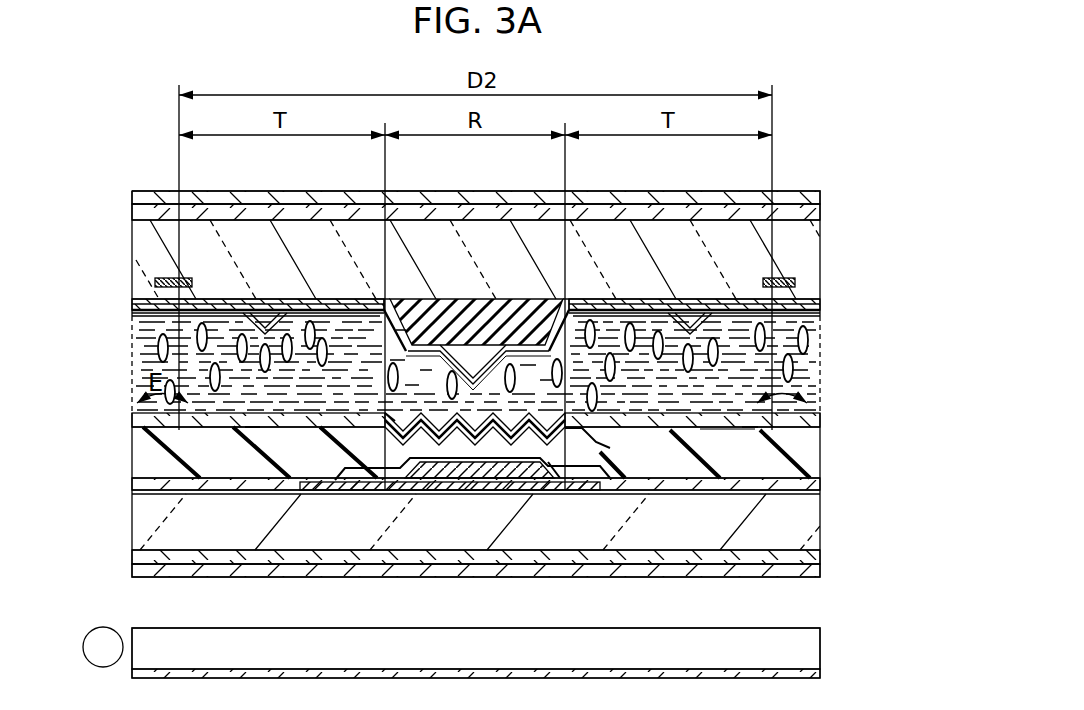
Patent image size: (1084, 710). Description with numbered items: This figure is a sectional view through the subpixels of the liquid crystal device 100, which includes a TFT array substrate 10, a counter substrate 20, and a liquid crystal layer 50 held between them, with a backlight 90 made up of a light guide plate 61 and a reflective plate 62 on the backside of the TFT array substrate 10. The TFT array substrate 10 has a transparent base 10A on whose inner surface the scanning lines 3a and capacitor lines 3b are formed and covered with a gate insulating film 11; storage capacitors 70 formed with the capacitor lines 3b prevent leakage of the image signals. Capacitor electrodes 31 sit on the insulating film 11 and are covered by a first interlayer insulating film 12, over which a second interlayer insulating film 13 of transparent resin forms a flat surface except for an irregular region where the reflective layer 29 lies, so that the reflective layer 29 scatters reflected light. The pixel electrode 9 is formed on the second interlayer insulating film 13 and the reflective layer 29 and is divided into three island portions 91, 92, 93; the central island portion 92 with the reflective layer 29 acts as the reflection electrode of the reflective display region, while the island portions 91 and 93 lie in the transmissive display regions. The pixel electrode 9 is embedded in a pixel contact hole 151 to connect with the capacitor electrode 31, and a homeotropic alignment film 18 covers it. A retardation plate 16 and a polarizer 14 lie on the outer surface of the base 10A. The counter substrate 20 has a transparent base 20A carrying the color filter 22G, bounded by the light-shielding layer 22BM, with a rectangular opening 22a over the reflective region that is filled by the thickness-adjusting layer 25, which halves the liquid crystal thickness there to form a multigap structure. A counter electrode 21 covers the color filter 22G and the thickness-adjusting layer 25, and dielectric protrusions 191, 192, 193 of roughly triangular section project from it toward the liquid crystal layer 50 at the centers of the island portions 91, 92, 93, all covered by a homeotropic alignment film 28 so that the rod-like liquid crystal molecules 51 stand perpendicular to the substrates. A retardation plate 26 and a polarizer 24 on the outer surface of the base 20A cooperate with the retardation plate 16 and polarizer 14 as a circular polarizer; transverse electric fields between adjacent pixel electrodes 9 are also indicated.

The liquid crystal device 100 is at (843, 157).
The counter substrate 20 is at (124, 313).
The TFT array substrate 10 is at (124, 577).
The polarizer 24 is at (822, 197).
The retardation plate 26 is at (822, 212).
The base 20A is at (822, 243).
The light-shielding layer 22BM is at (172, 277).
The color filter 22G is at (822, 304).
The opening 22a is at (500, 300).
The thickness-adjusting layer 25 is at (455, 320).
The counter electrode 21 is at (822, 311).
The homeotropic alignment film 28 is at (822, 318).
The dielectric protrusion 191 is at (270, 312).
The dielectric protrusion 192 is at (472, 360).
The dielectric protrusion 193 is at (690, 312).
The liquid crystal layer 50 is at (772, 397).
The liquid crystal molecules 51 is at (800, 360).
The homeotropic alignment film 18 is at (822, 420).
The second interlayer insulating film 13 is at (822, 455).
The first interlayer insulating film 12 is at (822, 484).
The insulating film 11 is at (822, 492).
The base 10A is at (822, 520).
The retardation plate 16 is at (822, 557).
The polarizer 14 is at (822, 570).
The reflective layer 29 is at (523, 445).
The storage capacitor 70 is at (562, 478).
The scanning line 3a is at (364, 492).
The capacitor line 3b is at (538, 470).
The capacitor electrode 31 is at (432, 472).
The pixel contact hole 151 is at (470, 445).
The island portion 91 is at (250, 430).
The island portion 92 is at (412, 432).
The island portion 93 is at (750, 428).
The pixel electrode 9 is at (727, 437).
The backlight 90 is at (882, 638).
The light guide plate 61 is at (822, 650).
The reflective plate 62 is at (822, 673).